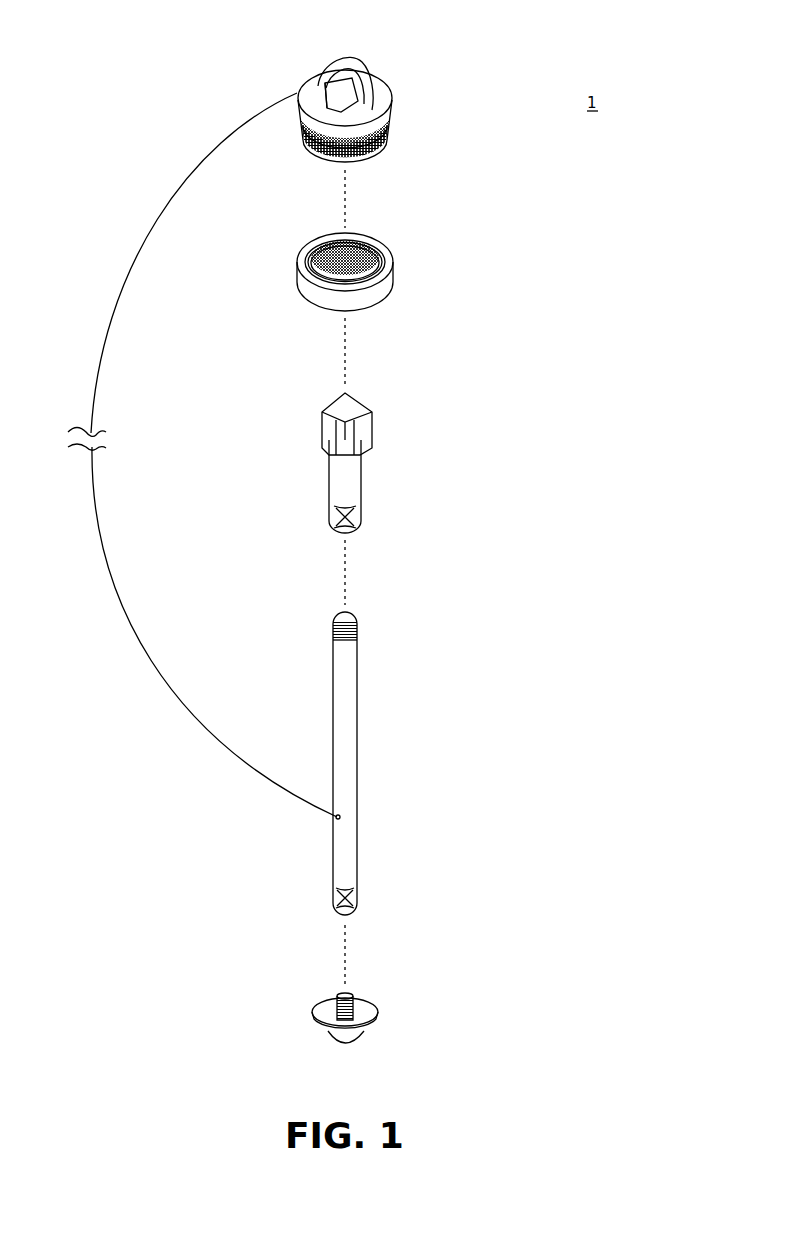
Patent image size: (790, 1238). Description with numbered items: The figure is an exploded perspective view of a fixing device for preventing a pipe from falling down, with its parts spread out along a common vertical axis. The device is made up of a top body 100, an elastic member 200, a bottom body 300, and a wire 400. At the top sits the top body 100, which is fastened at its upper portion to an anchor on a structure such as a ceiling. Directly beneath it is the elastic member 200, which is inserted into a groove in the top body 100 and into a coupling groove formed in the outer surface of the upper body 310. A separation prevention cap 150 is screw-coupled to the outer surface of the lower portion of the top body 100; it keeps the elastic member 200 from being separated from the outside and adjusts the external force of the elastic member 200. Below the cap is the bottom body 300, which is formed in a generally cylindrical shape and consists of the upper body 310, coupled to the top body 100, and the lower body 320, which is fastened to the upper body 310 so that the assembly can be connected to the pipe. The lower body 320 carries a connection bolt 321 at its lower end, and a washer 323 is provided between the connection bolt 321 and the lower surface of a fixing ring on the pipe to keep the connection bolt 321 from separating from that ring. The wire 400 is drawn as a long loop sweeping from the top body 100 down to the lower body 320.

The top body 100 is at (404, 85).
The elastic member 200 is at (378, 145).
The separation prevention cap 150 is at (388, 287).
The bottom body 300 is at (395, 455).
The upper body 310 is at (330, 492).
The lower body 320 is at (330, 692).
The connection bolt 321 is at (330, 1046).
The washer 323 is at (323, 1012).
The wire 400 is at (179, 700).